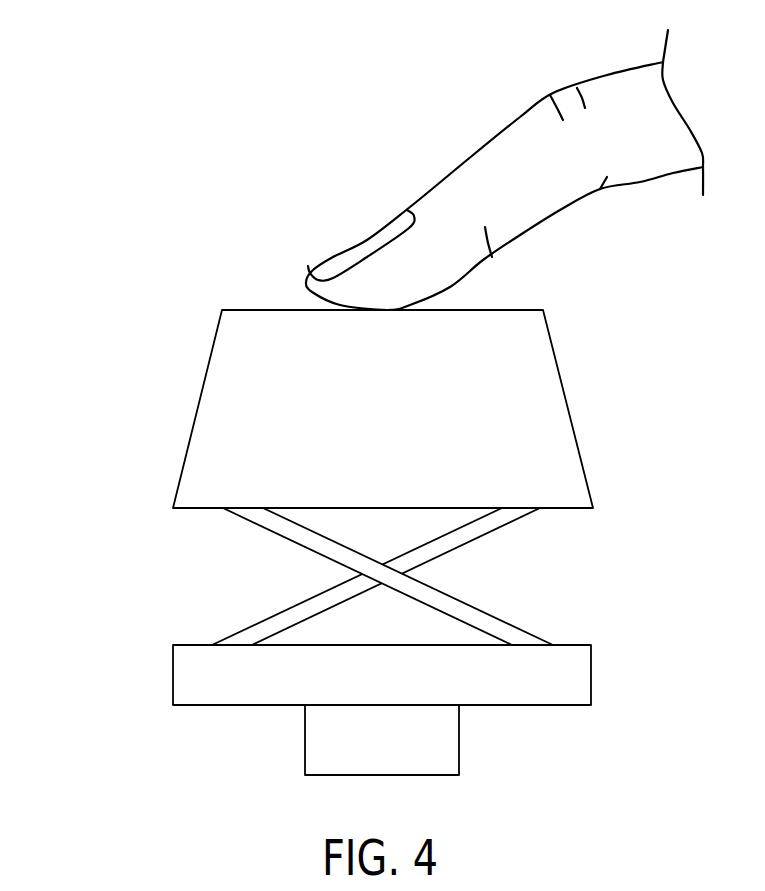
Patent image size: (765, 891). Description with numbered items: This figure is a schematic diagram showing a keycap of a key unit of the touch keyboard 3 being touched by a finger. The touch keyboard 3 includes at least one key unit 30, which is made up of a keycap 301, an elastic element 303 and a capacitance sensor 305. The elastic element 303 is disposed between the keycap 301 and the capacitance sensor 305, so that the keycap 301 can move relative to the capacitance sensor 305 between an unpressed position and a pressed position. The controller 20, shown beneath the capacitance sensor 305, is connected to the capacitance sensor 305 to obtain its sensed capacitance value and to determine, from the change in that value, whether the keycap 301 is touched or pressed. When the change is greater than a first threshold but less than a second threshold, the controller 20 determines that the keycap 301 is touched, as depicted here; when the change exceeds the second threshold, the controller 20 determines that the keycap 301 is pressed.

The touch keyboard 3 is at (44, 63).
The key unit 30 is at (660, 395).
The keycap 301 is at (548, 417).
The elastic element 303 is at (505, 628).
The capacitance sensor 305 is at (575, 680).
The controller 20 is at (445, 743).